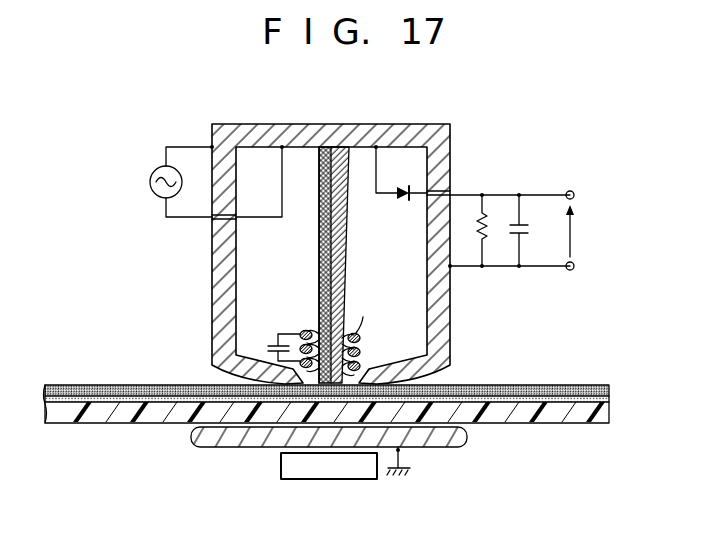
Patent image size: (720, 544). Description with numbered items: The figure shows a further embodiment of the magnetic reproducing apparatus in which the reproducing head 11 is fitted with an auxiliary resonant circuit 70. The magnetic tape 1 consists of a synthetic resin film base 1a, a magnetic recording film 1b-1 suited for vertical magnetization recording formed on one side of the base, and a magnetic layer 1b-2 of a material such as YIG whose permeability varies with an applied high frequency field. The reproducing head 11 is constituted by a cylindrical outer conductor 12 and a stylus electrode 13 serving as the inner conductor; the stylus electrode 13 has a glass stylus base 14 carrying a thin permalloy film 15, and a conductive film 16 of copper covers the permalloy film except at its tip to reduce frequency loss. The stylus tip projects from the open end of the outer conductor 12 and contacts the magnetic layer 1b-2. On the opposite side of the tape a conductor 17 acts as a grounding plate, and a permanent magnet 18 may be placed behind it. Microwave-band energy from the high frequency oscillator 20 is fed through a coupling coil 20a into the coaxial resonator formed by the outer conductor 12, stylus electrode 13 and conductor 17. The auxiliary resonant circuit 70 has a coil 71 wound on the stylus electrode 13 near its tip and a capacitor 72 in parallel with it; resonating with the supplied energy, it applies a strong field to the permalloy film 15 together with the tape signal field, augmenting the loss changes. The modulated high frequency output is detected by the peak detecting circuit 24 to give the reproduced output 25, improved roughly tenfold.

The magnetic tape 1 is at (605, 370).
The synthetic resin film base 1a is at (616, 413).
The magnetic recording film 1b-1 is at (552, 385).
The magnetic layer 1b-2 is at (555, 406).
The reproducing head 11 is at (189, 287).
The cylindrical outer conductor 12 is at (278, 123).
The stylus electrode 13 is at (353, 227).
The stylus base 14 is at (348, 262).
The permalloy film 15 is at (319, 247).
The conductive film 16 is at (319, 281).
The conductor 17 is at (241, 450).
The permanent magnet 18 is at (326, 480).
The high frequency oscillator 20 is at (149, 180).
The coupling coil 20a is at (257, 216).
The peak detecting circuit 24 is at (522, 183).
The reproduced output 25 is at (573, 236).
The auxiliary resonant circuit 70 is at (387, 342).
The coil 71 is at (359, 328).
The capacitor 72 is at (262, 344).